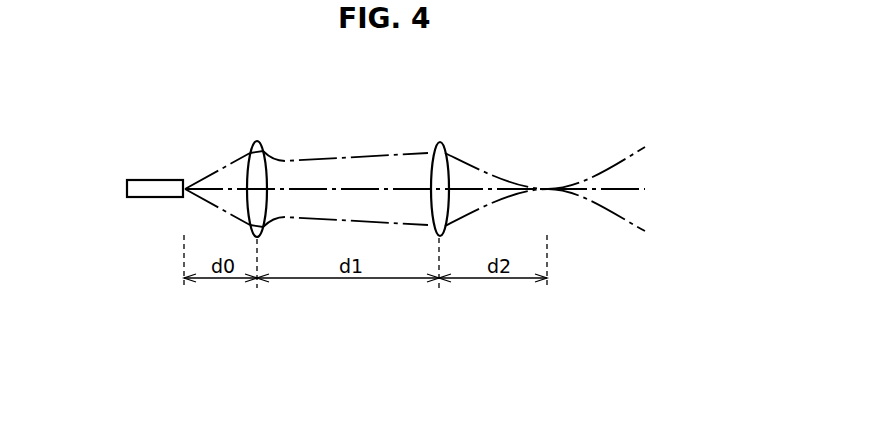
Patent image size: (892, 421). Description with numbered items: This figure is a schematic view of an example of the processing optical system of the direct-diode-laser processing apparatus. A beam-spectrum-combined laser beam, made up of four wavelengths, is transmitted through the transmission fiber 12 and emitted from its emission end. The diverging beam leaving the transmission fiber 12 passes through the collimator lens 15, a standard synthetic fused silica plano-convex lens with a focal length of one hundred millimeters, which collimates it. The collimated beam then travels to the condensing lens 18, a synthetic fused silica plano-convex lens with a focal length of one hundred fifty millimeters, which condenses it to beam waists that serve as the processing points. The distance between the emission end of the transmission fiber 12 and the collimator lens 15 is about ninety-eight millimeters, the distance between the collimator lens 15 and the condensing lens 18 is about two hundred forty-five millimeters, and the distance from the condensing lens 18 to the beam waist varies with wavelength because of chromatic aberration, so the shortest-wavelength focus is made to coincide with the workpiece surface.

The transmission fiber 12 is at (163, 180).
The collimator lens 15 is at (260, 144).
The condensing lens 18 is at (445, 148).